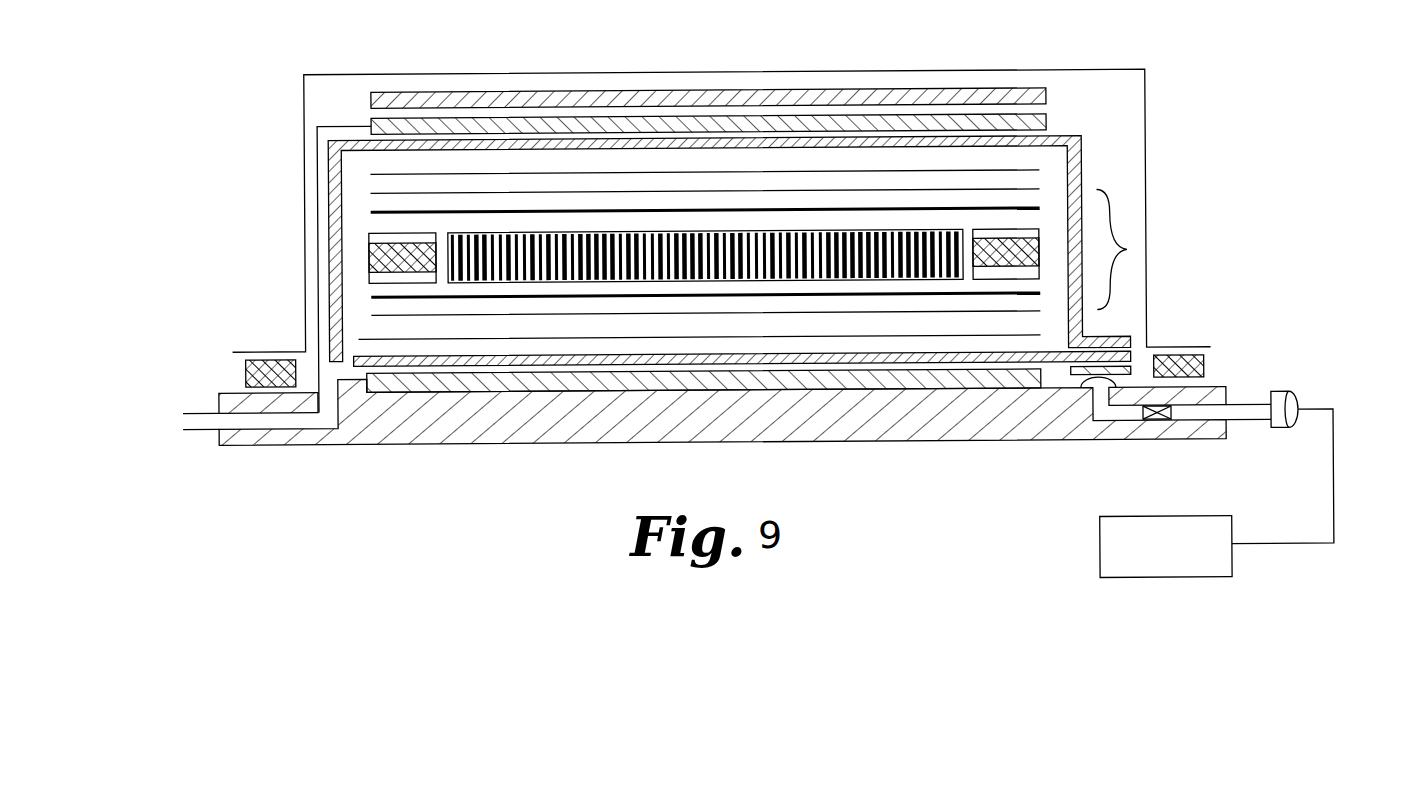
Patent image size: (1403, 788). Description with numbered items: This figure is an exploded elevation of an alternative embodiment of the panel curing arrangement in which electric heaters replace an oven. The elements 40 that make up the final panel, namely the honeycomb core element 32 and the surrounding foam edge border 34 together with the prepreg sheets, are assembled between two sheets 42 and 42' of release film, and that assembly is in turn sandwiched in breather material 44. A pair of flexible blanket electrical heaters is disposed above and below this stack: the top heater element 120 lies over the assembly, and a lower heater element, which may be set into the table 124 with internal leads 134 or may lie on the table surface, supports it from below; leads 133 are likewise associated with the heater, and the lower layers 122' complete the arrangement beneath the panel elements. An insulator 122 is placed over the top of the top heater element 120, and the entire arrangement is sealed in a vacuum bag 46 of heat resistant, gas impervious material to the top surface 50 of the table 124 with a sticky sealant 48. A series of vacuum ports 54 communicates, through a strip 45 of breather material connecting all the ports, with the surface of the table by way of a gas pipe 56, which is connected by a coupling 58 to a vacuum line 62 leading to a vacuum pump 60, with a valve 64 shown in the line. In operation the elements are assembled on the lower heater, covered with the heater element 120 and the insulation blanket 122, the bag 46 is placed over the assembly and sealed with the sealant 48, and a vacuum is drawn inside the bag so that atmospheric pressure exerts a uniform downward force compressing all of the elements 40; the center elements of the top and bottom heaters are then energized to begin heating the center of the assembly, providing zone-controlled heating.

The vacuum bag 46 is at (438, 72).
The insulator 122 is at (708, 54).
The top heater element 120 is at (1055, 119).
The release film sheet 42 is at (816, 142).
The release film sheet 42' is at (742, 408).
The breather material sheet 44 is at (1083, 175).
The panel elements 40 is at (1130, 252).
The foam edge border 34 is at (368, 257).
The honeycomb core element 32 is at (528, 271).
The table 124 is at (587, 396).
The top surface 50 is at (245, 387).
The gas inlet passage 133 is at (200, 408).
The internal leads 134 is at (200, 428).
The lower plate electrode 122' is at (704, 453).
The sealant 48 is at (245, 349).
The vacuum ports 54 is at (1131, 374).
The breather material strip 45 is at (1063, 384).
The gas pipe 56 is at (1246, 401).
The coupling 58 is at (1302, 400).
The valve 64 is at (1152, 425).
The vacuum line 62 is at (1330, 504).
The vacuum pump 60 is at (1142, 566).